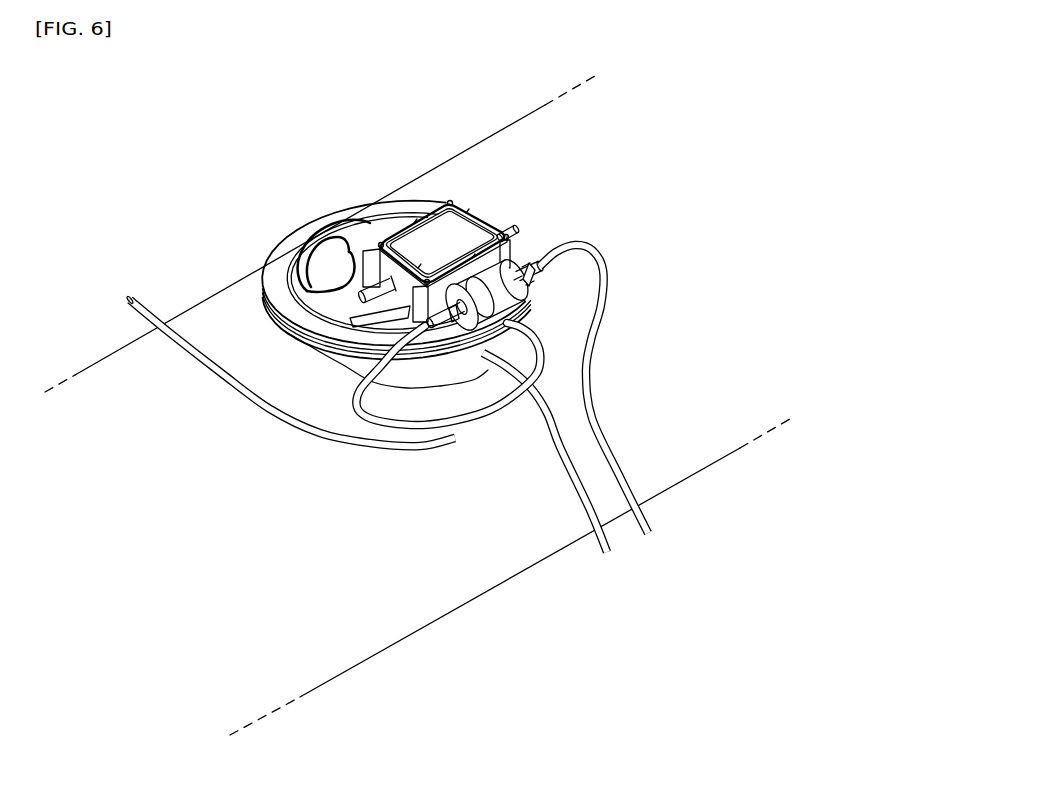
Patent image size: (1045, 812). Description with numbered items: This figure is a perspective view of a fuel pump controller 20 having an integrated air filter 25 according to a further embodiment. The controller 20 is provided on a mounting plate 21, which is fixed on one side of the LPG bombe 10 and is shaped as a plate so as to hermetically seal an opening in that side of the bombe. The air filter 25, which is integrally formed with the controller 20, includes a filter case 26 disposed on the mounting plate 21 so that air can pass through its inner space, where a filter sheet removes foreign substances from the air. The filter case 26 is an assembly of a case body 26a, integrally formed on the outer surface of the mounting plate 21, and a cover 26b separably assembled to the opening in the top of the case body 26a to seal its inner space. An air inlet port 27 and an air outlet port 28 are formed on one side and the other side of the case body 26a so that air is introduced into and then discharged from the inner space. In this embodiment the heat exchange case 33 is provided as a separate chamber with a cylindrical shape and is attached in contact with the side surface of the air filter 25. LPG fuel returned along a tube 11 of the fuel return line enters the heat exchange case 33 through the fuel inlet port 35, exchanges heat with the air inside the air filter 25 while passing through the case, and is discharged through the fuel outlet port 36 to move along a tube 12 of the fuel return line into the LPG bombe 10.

The LPG bombe 10 is at (643, 390).
The tube of the fuel return line 11 is at (598, 317).
The tube of the fuel return line 12 is at (390, 427).
The fuel pump controller 20 is at (464, 129).
The mounting plate 21 is at (288, 252).
The air filter 25 is at (419, 204).
The filter case 26 is at (336, 201).
The case body 26a is at (331, 252).
The cover 26b is at (405, 242).
The air inlet port 27 is at (360, 293).
The air outlet port 28 is at (517, 230).
The heat exchange case 33 is at (488, 412).
The fuel inlet port 35 is at (546, 262).
The fuel outlet port 36 is at (284, 336).